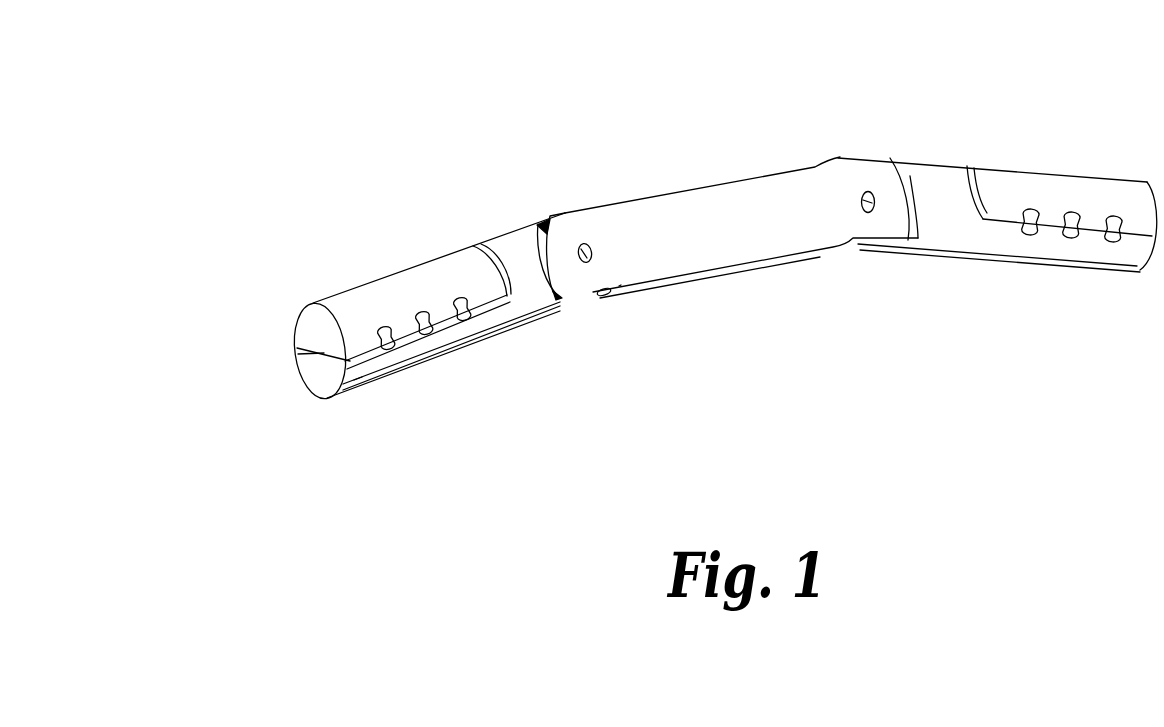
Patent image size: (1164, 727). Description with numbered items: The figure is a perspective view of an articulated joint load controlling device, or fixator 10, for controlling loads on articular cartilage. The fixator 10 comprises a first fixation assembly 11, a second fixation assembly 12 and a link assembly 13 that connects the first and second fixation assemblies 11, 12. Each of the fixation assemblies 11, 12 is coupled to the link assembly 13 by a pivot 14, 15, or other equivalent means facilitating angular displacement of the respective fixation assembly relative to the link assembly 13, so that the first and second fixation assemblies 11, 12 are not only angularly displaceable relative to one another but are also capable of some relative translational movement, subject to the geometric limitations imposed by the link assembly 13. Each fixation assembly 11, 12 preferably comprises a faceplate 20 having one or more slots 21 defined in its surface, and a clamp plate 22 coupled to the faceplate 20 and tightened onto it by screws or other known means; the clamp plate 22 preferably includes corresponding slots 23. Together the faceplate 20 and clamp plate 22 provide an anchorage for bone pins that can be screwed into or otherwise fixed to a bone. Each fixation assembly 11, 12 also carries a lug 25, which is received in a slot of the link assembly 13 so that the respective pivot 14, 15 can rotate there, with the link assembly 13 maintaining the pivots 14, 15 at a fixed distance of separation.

The fixator 10 is at (452, 84).
The first fixation assembly 11 is at (432, 363).
The second fixation assembly 12 is at (1064, 268).
The link assembly 13 is at (667, 263).
The pivot 14 is at (583, 243).
The pivot 15 is at (862, 202).
The faceplate 20 is at (323, 353).
The slots 21 is at (393, 357).
The clamp plate 22 is at (340, 305).
The slots 23 is at (423, 318).
The lug 25 is at (572, 308).